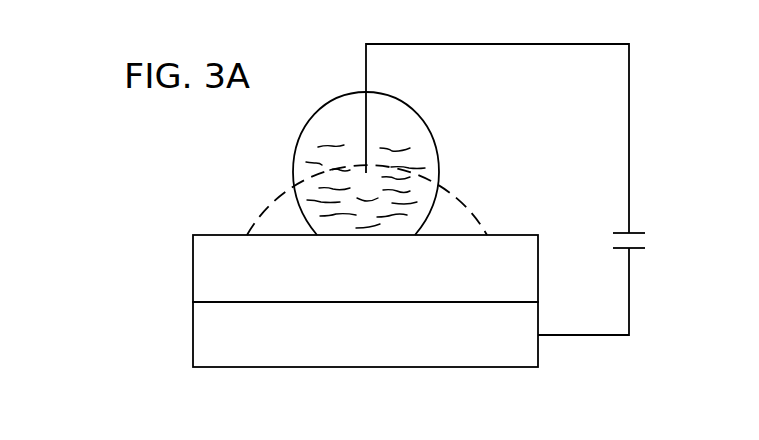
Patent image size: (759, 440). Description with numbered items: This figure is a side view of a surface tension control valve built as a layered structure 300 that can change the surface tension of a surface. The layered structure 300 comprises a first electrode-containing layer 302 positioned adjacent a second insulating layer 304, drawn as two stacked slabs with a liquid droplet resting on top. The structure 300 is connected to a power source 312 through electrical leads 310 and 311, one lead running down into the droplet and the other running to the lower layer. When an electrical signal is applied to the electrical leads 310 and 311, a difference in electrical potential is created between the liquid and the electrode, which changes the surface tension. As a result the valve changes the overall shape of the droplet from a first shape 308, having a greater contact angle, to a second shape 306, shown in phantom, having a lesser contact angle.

The layered structure 300 is at (268, 168).
The first electrode-containing layer 302 is at (384, 347).
The second insulating layer 304 is at (384, 283).
The second shape 306 is at (480, 226).
The first shape 308 is at (434, 146).
The electrical lead 310 is at (630, 193).
The electrical lead 311 is at (630, 275).
The power source 312 is at (637, 233).